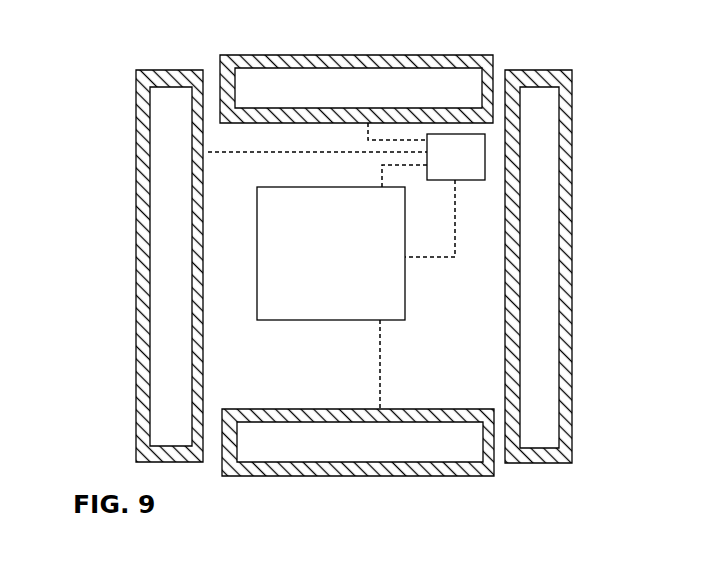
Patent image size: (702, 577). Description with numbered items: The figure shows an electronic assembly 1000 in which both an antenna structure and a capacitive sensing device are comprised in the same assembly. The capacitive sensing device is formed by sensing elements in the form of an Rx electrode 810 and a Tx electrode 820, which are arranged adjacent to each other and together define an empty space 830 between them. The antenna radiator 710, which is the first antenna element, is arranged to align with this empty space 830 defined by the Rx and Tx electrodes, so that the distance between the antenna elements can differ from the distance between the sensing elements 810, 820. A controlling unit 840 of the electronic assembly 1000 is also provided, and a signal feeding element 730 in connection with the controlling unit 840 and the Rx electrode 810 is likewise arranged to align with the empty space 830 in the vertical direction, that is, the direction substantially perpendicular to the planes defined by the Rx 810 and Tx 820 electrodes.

The electronic assembly 1000 is at (118, 65).
The antenna radiator 710 is at (350, 266).
The signal feeding element 730 is at (427, 258).
The Rx electrode 810 is at (175, 240).
The Tx electrode 820 is at (200, 313).
The empty space 830 is at (477, 381).
The controlling unit 840 is at (475, 168).